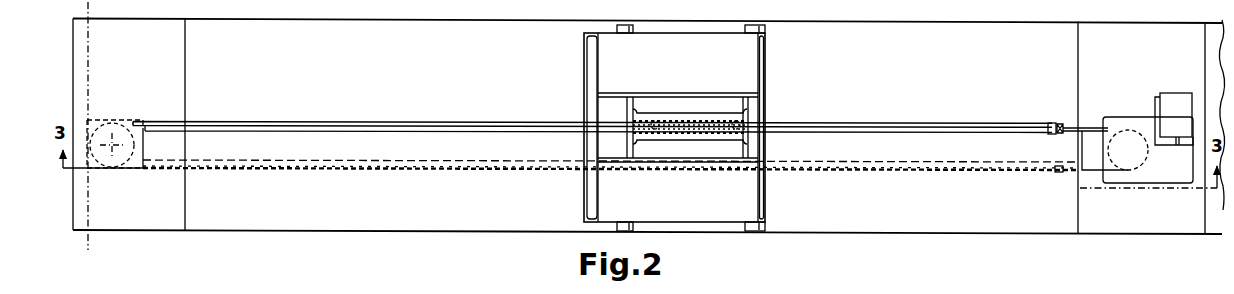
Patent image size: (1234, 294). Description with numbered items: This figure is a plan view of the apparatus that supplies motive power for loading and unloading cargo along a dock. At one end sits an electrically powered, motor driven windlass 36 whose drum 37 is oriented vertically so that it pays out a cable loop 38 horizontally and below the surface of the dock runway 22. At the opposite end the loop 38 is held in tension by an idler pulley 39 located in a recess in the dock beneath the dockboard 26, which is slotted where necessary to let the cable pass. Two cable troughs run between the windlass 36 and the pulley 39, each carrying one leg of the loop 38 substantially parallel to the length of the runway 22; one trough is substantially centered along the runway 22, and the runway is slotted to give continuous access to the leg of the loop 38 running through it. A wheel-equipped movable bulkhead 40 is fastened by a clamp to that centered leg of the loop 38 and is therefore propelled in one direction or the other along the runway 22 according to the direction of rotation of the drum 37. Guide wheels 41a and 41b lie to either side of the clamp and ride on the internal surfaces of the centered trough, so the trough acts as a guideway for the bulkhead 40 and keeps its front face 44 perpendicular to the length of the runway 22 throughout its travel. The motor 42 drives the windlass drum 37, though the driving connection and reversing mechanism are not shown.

The dock runway 22 is at (453, 90).
The dockboard 26 is at (123, 210).
The windlass 36 is at (1138, 196).
The drum 37 is at (1116, 160).
The cable loop 38 is at (282, 121).
The idler pulley 39 is at (133, 150).
The movable bulkhead 40 is at (767, 77).
The guide wheel 41a is at (656, 121).
The guide wheel 41b is at (737, 121).
The motor 42 is at (1165, 121).
The front face 44 is at (584, 75).